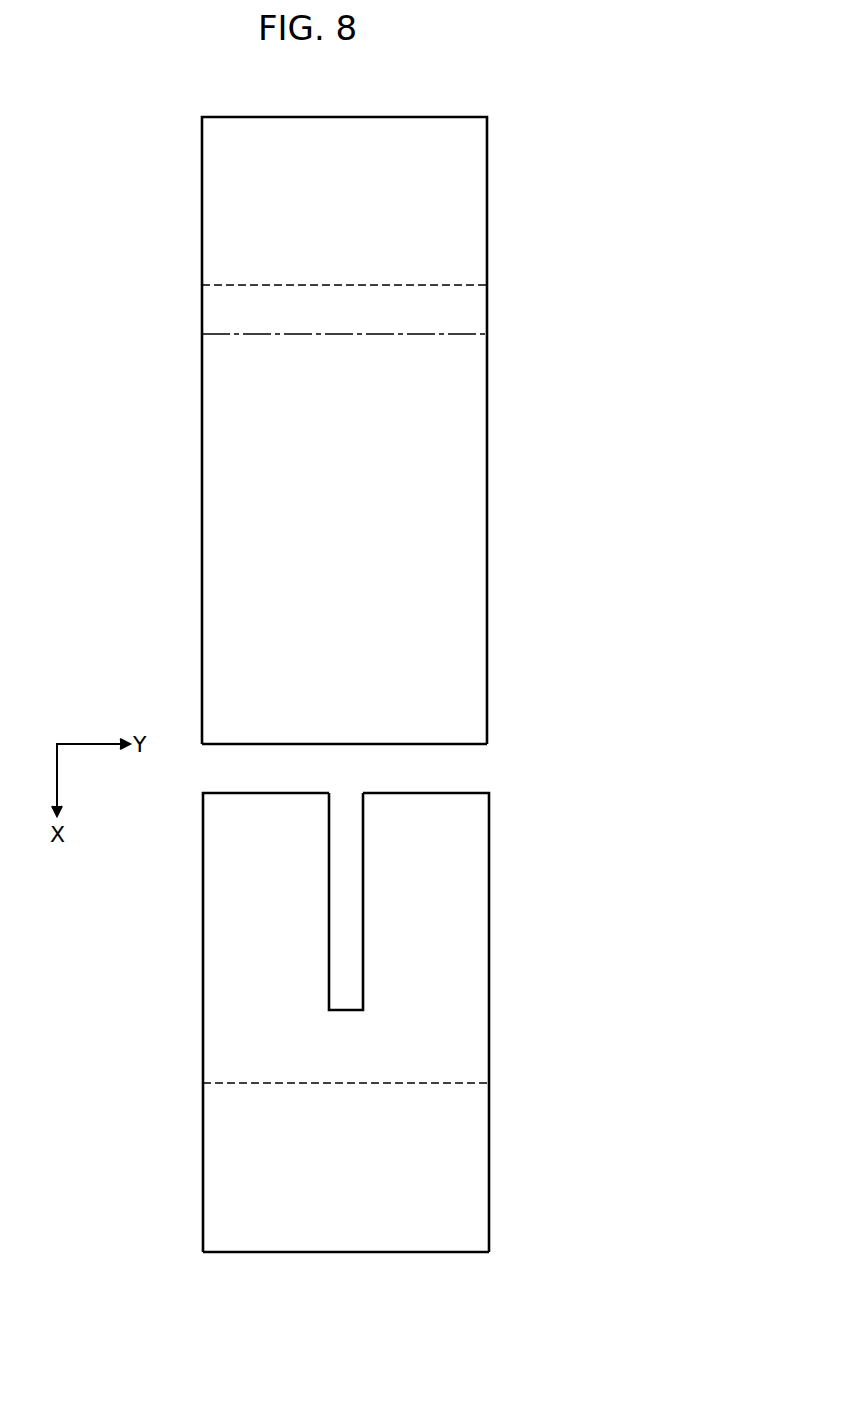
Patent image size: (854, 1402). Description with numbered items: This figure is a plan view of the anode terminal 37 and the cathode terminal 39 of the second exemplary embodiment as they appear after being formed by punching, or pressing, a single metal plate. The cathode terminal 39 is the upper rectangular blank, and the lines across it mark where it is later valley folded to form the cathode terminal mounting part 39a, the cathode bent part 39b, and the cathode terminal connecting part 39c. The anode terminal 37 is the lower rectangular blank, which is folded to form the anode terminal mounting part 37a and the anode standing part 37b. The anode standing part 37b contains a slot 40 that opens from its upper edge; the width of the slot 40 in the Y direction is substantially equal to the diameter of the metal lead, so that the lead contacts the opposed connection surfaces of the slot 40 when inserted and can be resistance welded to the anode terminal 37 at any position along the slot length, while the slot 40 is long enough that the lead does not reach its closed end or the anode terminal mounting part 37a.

The cathode terminal 39 is at (92, 263).
The cathode terminal mounting part 39a is at (217, 257).
The cathode bent part 39b is at (217, 309).
The cathode terminal connecting part 39c is at (217, 392).
The anode terminal 37 is at (92, 1053).
The anode terminal mounting part 37a is at (228, 1146).
The anode standing part 37b is at (228, 1044).
The slot 40 is at (339, 840).